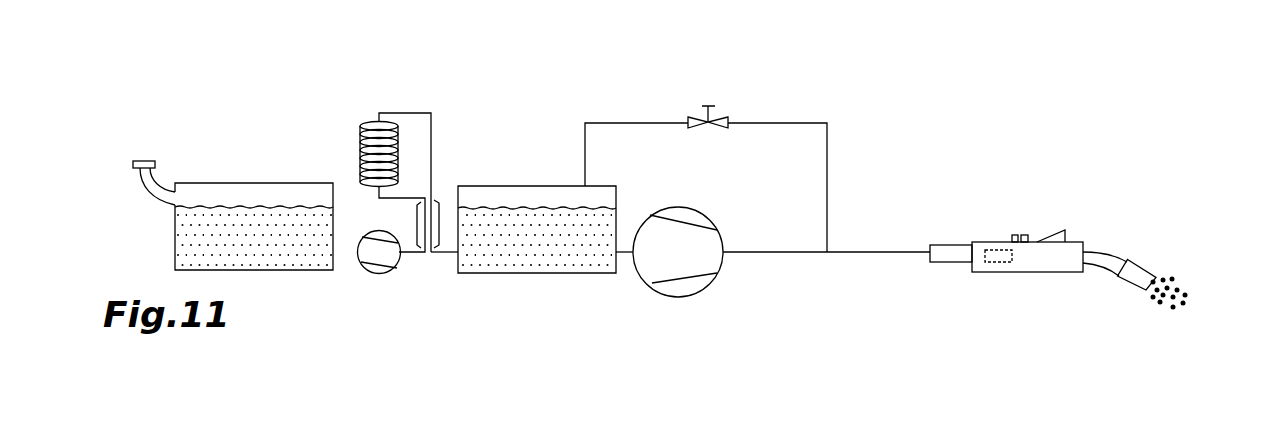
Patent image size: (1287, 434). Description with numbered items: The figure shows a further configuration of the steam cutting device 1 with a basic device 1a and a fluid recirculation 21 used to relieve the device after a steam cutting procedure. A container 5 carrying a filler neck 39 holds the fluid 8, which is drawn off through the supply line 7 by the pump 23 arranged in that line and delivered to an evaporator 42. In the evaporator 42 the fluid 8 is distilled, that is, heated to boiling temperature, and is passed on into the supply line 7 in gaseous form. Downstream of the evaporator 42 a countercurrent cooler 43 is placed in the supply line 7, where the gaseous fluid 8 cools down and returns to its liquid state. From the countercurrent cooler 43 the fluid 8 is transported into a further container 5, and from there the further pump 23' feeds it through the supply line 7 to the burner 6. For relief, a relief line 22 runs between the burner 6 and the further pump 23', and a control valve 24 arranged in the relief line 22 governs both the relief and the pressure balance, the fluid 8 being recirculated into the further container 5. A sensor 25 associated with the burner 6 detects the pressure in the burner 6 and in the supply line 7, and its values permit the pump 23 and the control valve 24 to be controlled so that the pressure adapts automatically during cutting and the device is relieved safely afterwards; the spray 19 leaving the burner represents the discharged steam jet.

The steam cutting device 1 is at (348, 88).
The basic device 1a is at (973, 120).
The container 5 is at (270, 290).
The burner 6 is at (982, 290).
The supply line 7 is at (443, 253).
The fluid 8 is at (250, 232).
The spray jet 19 is at (1185, 278).
The fluid recirculation 21 is at (243, 113).
The relief line 22 is at (828, 175).
The pump 23 is at (359, 310).
The further pump 23' is at (680, 300).
The control valve 24 is at (688, 105).
The sensor 25 is at (1000, 258).
The filler neck 39 is at (148, 185).
The evaporator 42 is at (441, 185).
The countercurrent cooler 43 is at (378, 145).